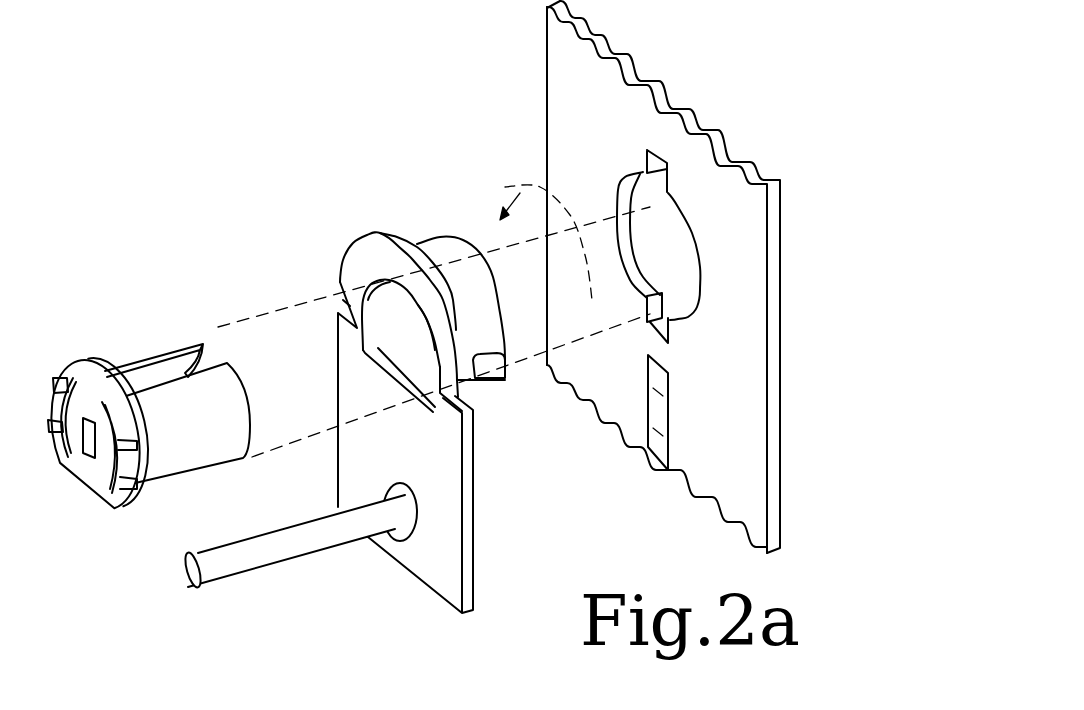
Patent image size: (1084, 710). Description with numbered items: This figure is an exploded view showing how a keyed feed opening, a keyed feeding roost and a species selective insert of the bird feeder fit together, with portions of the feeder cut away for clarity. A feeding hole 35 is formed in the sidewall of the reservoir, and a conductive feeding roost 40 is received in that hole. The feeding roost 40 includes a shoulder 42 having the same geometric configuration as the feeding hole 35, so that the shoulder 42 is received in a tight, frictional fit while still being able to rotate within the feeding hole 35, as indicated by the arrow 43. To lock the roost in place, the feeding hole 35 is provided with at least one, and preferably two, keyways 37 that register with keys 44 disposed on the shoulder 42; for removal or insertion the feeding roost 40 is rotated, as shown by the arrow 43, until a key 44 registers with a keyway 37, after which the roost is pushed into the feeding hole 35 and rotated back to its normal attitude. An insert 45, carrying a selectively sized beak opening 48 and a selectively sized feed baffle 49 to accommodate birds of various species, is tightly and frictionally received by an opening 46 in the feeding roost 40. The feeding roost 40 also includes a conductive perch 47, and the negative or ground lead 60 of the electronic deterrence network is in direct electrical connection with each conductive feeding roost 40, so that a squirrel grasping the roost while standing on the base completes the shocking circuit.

The feeding hole 35 is at (670, 250).
The keyway 37 is at (652, 150).
The feeding roost 40 is at (462, 480).
The shoulder 42 is at (438, 252).
The arrow 43 is at (525, 184).
The key 44 is at (488, 372).
The insert 45 is at (69, 408).
The opening 46 is at (335, 302).
The conductive perch 47 is at (303, 548).
The beak opening 48 is at (47, 378).
The feed baffle 49 is at (187, 345).
The negative lead 60 is at (670, 401).